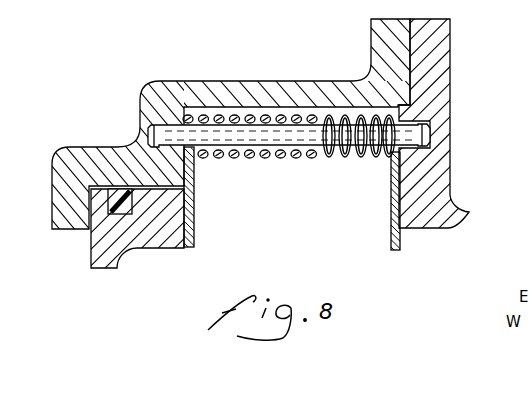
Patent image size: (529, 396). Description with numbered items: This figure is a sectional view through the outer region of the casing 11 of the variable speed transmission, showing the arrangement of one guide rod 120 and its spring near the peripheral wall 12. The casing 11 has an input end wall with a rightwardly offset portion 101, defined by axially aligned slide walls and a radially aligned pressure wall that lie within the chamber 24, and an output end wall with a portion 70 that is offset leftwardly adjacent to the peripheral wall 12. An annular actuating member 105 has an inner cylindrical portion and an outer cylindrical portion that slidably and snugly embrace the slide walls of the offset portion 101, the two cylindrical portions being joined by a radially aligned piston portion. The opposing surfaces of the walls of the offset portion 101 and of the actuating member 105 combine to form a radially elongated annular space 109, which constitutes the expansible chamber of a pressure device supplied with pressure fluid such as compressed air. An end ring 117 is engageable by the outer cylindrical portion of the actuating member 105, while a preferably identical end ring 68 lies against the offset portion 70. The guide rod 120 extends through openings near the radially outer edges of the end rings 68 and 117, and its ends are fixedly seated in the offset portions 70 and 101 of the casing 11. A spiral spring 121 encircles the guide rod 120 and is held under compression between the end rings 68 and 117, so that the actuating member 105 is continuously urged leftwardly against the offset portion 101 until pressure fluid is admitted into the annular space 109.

The casing 11 is at (156, 75).
The peripheral wall 12 is at (308, 97).
The chamber 24 is at (289, 115).
The end ring 68 is at (390, 225).
The offset portion 70 is at (447, 158).
The offset portion 101 is at (57, 205).
The actuating member 105 is at (144, 258).
The annular space 109 is at (90, 231).
The end ring 117 is at (195, 220).
The guide rod 120 is at (281, 148).
The spiral spring 121 is at (340, 158).